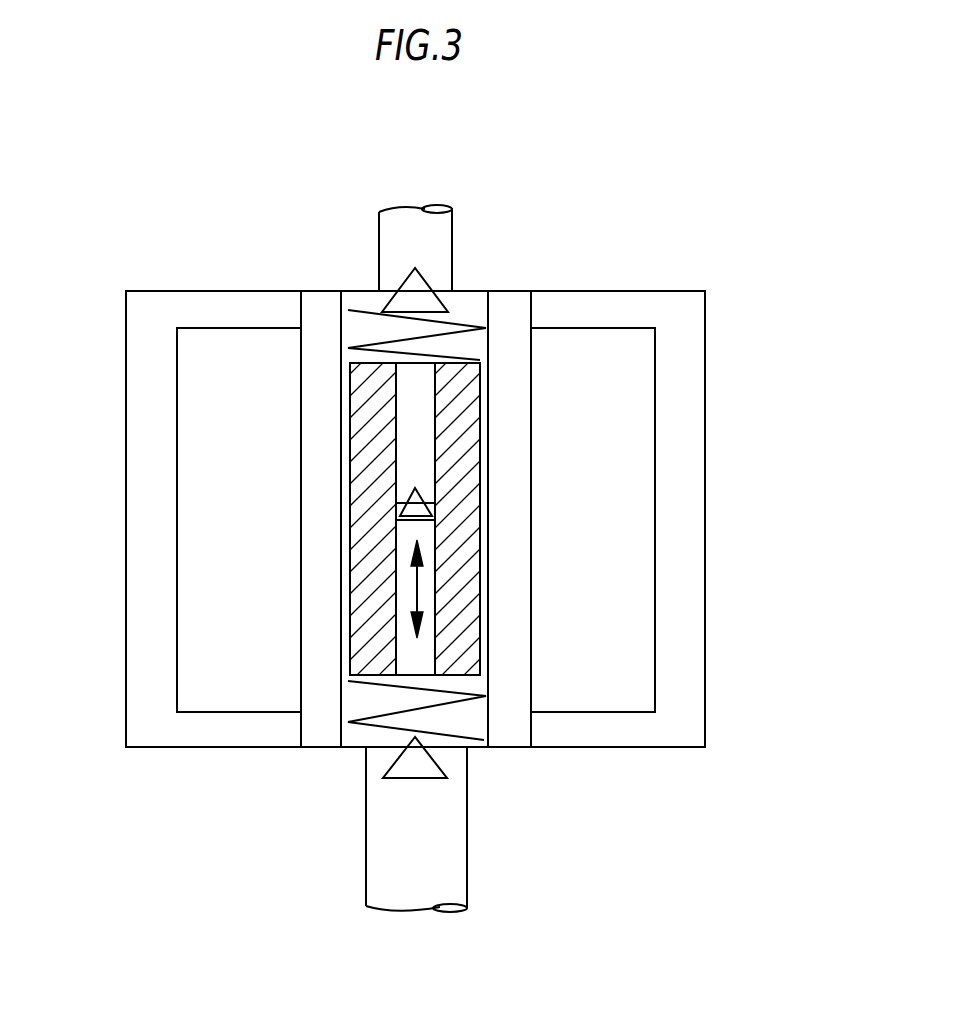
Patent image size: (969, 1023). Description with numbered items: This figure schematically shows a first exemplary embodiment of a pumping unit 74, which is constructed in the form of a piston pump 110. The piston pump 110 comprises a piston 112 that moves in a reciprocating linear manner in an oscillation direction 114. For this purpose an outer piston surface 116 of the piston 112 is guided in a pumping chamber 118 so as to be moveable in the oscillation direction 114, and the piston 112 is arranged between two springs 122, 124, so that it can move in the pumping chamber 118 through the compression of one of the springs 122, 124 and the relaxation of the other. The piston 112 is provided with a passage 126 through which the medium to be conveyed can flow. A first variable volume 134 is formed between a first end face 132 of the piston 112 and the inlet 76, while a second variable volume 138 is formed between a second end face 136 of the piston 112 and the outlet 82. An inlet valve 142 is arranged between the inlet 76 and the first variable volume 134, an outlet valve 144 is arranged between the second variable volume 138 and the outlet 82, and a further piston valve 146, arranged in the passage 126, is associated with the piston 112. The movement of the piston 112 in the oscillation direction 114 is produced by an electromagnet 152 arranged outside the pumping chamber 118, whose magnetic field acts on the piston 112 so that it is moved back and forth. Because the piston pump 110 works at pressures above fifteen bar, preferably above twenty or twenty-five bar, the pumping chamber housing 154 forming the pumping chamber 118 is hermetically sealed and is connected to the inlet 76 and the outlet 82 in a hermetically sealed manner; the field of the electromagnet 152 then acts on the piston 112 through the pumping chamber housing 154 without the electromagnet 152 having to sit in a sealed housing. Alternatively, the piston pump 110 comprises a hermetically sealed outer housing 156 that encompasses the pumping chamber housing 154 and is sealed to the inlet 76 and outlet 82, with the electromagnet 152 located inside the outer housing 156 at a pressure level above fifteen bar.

The pumping unit 74 is at (779, 309).
The inlet 76 is at (424, 244).
The outlet 82 is at (380, 870).
The piston pump 110 is at (735, 434).
The piston 112 is at (464, 515).
The oscillation direction 114 is at (430, 575).
The outer piston surface 116 is at (483, 628).
The pumping chamber 118 is at (488, 452).
The first spring 122 is at (462, 326).
The second spring 124 is at (446, 742).
The passage 126 is at (400, 578).
The first end face 132 is at (350, 354).
The first variable volume 134 is at (375, 320).
The second end face 136 is at (372, 688).
The second variable volume 138 is at (372, 733).
The inlet valve 142 is at (417, 292).
The outlet valve 144 is at (418, 768).
The piston valve 146 is at (398, 510).
The electromagnet 152 is at (230, 457).
The pumping chamber housing 154 is at (320, 332).
The outer housing 156 is at (157, 392).